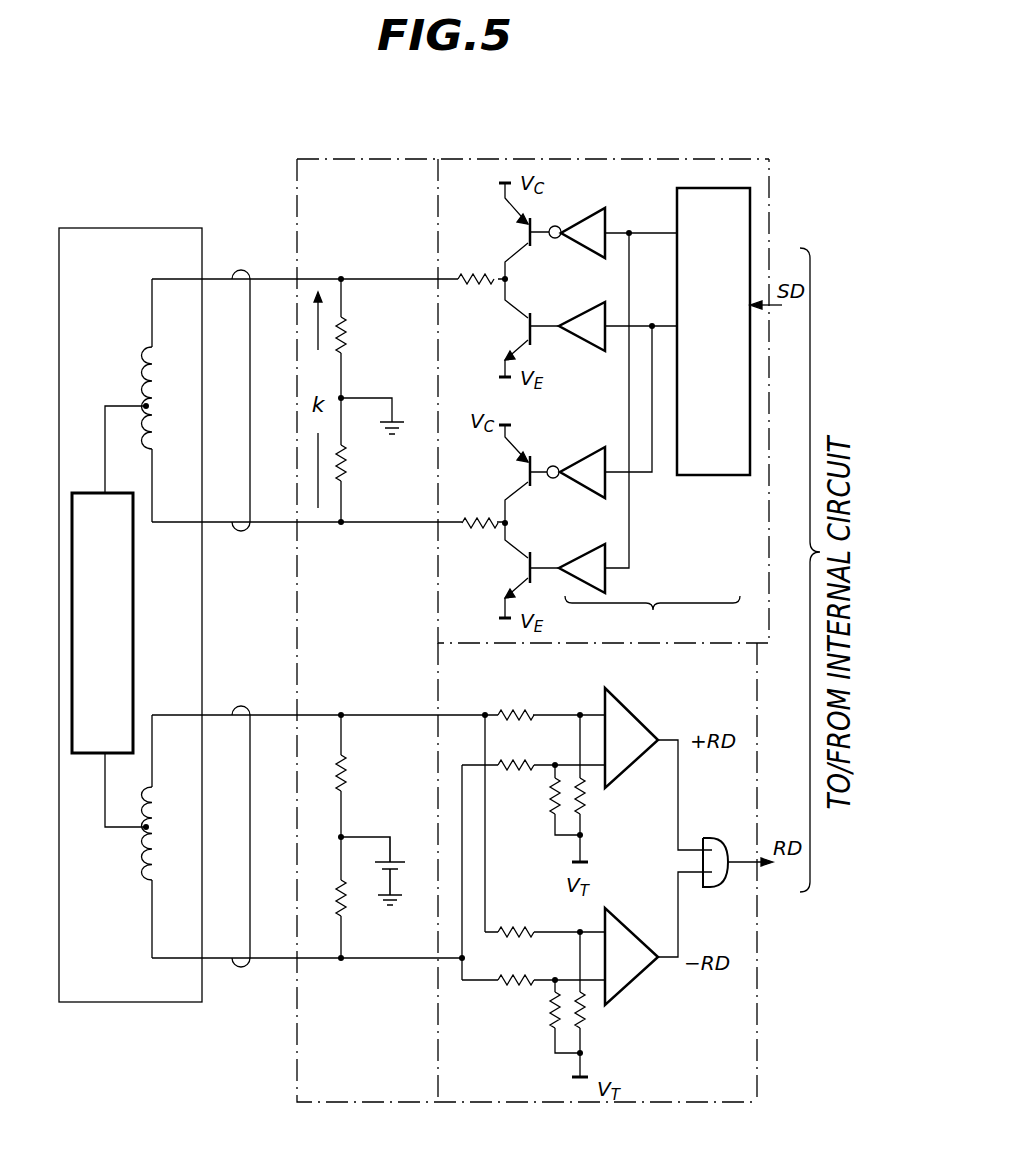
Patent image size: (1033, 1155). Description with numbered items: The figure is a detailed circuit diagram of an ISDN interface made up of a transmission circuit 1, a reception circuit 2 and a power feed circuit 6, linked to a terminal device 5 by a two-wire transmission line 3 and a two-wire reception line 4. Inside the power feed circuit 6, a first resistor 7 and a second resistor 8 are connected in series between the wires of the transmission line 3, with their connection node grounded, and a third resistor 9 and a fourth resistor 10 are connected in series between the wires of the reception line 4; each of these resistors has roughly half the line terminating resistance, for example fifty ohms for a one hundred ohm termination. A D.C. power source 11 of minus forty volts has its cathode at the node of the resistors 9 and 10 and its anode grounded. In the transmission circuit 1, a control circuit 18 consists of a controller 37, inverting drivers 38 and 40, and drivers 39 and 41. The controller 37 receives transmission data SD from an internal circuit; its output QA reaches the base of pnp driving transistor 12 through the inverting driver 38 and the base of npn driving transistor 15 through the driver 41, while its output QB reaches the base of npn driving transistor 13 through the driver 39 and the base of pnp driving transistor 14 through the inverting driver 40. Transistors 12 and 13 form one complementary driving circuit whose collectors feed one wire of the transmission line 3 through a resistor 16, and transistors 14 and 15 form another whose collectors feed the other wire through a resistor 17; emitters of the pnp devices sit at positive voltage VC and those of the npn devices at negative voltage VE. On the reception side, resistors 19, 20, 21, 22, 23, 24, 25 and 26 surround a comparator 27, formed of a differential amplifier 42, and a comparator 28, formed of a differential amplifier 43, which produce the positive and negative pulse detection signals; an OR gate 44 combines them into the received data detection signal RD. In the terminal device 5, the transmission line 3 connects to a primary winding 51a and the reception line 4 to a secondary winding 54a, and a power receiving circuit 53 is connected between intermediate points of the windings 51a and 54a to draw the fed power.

The transmission circuit 1 is at (495, 158).
The reception circuit 2 is at (640, 1103).
The transmission line 3 is at (244, 260).
The reception line 4 is at (241, 698).
The terminal device 5 is at (108, 228).
The power feed circuit 6 is at (338, 158).
The first resistor 7 is at (371, 337).
The second resistor 8 is at (371, 461).
The third resistor 9 is at (371, 774).
The fourth resistor 10 is at (361, 899).
The D.C. power source 11 is at (402, 872).
The driving transistor 12 is at (515, 231).
The driving transistor 13 is at (520, 328).
The driving transistor 14 is at (513, 474).
The driving transistor 15 is at (519, 570).
The resistor 16 is at (477, 268).
The resistor 17 is at (477, 510).
The control circuit 18 is at (652, 619).
The resistor 19 is at (532, 703).
The resistor 20 is at (533, 753).
The resistor 21 is at (617, 788).
The resistor 22 is at (539, 804).
The resistor 23 is at (545, 920).
The resistor 24 is at (533, 969).
The resistor 25 is at (623, 1004).
The resistor 26 is at (536, 1020).
The comparator 27 is at (697, 689).
The comparator 28 is at (672, 1050).
The controller 37 is at (716, 478).
The inverting driver 38 is at (586, 220).
The driver 39 is at (572, 316).
The inverting driver 40 is at (578, 459).
The driver 41 is at (582, 556).
The differential amplifier 42 is at (644, 712).
The differential amplifier 43 is at (638, 930).
The OR gate 44 is at (720, 836).
The primary winding 51a is at (140, 345).
The power receiving circuit 53 is at (133, 650).
The secondary winding 54a is at (142, 864).